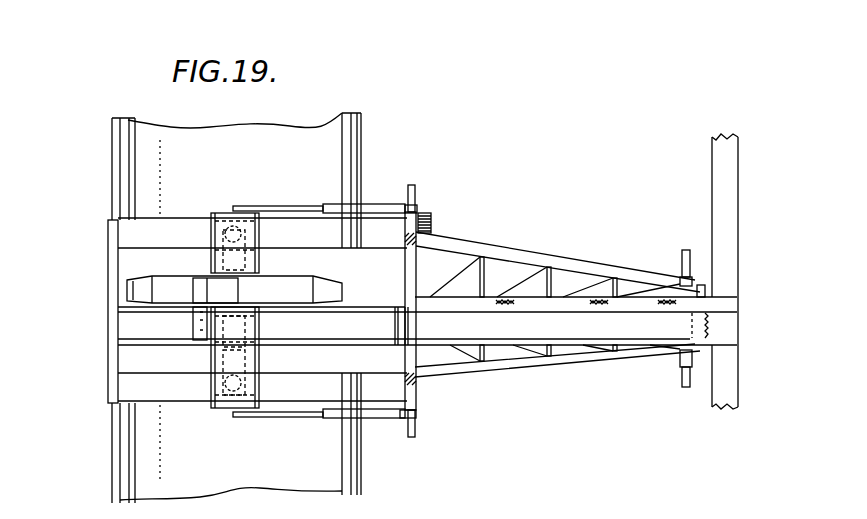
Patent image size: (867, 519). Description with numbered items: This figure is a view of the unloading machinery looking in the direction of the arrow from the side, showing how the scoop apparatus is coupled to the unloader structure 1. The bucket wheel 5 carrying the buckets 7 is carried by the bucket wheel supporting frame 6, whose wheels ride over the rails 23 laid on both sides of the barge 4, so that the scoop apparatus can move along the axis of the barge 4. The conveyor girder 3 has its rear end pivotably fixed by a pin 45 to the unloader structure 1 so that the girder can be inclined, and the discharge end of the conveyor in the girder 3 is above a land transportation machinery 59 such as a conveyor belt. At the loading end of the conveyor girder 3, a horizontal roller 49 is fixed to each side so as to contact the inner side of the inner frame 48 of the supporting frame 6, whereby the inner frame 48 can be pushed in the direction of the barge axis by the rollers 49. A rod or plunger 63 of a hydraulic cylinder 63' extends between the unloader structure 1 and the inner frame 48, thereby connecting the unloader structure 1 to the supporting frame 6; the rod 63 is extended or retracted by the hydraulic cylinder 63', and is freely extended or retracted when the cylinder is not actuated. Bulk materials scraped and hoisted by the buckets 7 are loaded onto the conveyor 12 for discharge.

The unloader structure 1 is at (593, 262).
The conveyor girder 3 is at (452, 246).
The barge 4 is at (298, 130).
The bucket wheel 5 is at (180, 298).
The bucket wheel supporting frame 6 is at (128, 373).
The buckets 7 is at (133, 292).
The conveyor 12 is at (551, 323).
The rails 23 is at (112, 195).
The pin 45 is at (700, 297).
The inner frame 48 is at (224, 408).
The horizontal roller 49 is at (218, 212).
The land transportation machinery 59 is at (712, 161).
The rod or plunger 63 is at (319, 292).
The hydraulic cylinder 63' is at (398, 292).